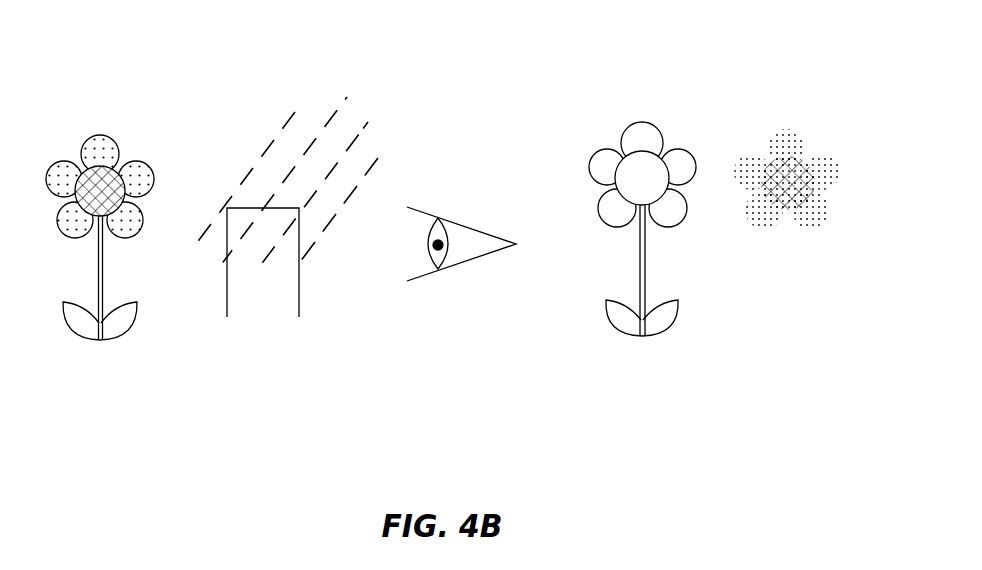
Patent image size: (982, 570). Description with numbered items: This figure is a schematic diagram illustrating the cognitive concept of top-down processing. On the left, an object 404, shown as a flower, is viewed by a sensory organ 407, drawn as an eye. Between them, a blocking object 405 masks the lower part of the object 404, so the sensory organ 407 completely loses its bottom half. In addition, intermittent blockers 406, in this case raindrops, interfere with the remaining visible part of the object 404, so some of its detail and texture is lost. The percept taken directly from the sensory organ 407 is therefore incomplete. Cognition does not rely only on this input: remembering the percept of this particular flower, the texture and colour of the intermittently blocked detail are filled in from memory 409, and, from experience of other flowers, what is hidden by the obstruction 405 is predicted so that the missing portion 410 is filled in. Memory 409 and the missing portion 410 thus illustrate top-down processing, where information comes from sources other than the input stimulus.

The object 404 is at (110, 353).
The blocking object 405 is at (272, 353).
The intermittent blockers 406 is at (250, 110).
The sensory organ 407 is at (457, 317).
The memory 409 is at (783, 110).
The missing portion 410 is at (648, 352).